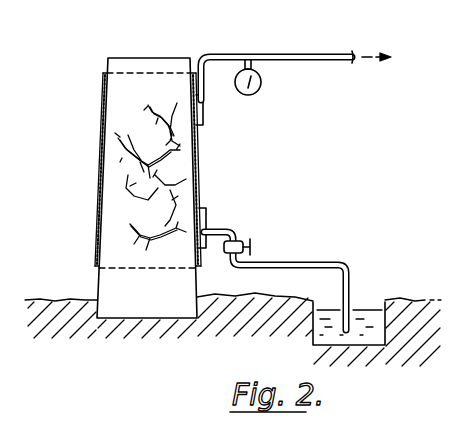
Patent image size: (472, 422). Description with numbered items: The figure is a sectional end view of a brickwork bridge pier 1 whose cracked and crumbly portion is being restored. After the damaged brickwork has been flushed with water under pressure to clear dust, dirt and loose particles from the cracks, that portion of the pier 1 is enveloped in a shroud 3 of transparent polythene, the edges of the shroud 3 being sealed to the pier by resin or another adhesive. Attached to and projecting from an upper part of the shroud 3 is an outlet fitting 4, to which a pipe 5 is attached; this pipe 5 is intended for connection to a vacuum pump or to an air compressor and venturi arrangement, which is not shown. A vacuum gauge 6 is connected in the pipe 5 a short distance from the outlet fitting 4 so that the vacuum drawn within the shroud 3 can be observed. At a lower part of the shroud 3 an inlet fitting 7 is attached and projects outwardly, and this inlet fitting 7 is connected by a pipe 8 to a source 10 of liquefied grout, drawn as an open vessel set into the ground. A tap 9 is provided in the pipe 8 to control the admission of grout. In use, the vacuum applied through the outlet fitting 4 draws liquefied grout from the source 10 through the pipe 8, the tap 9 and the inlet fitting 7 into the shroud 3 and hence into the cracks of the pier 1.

The bridge pier 1 is at (98, 276).
The shroud 3 is at (101, 172).
The outlet fitting 4 is at (202, 113).
The pipe 5 is at (301, 53).
The vacuum gauge 6 is at (260, 89).
The inlet fitting 7 is at (206, 220).
The pipe 8 is at (288, 262).
The tap 9 is at (247, 242).
The source of liquefied grout 10 is at (350, 312).